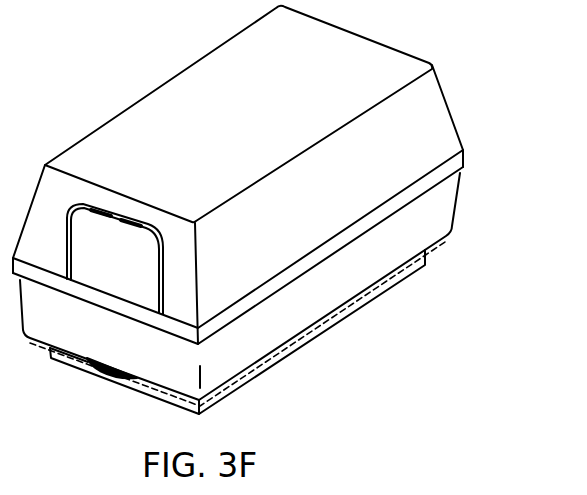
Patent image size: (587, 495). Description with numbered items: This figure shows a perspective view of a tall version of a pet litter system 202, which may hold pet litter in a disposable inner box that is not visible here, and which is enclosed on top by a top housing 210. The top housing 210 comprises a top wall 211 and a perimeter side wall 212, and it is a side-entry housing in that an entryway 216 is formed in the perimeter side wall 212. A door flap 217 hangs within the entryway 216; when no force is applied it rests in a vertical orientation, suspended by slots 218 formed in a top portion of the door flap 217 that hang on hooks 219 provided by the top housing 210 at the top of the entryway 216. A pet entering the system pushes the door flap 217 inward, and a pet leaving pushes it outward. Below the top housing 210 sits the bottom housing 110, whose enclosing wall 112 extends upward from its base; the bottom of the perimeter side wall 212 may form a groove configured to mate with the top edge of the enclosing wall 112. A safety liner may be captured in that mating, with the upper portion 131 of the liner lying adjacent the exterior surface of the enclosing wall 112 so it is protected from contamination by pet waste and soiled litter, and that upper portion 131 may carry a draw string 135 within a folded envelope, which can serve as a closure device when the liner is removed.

The pet litter system 202 is at (229, 26).
The top housing 210 is at (178, 51).
The top wall 211 is at (215, 108).
The perimeter side wall 212 is at (333, 208).
The door flap 217 is at (83, 240).
The slots 218 is at (118, 212).
The hooks 219 is at (127, 220).
The bottom housing 110 is at (351, 334).
The enclosing wall 112 is at (297, 348).
The upper portion of safety liner 131 is at (360, 292).
The draw string 135 is at (88, 360).
The entryway 216 is at (138, 378).